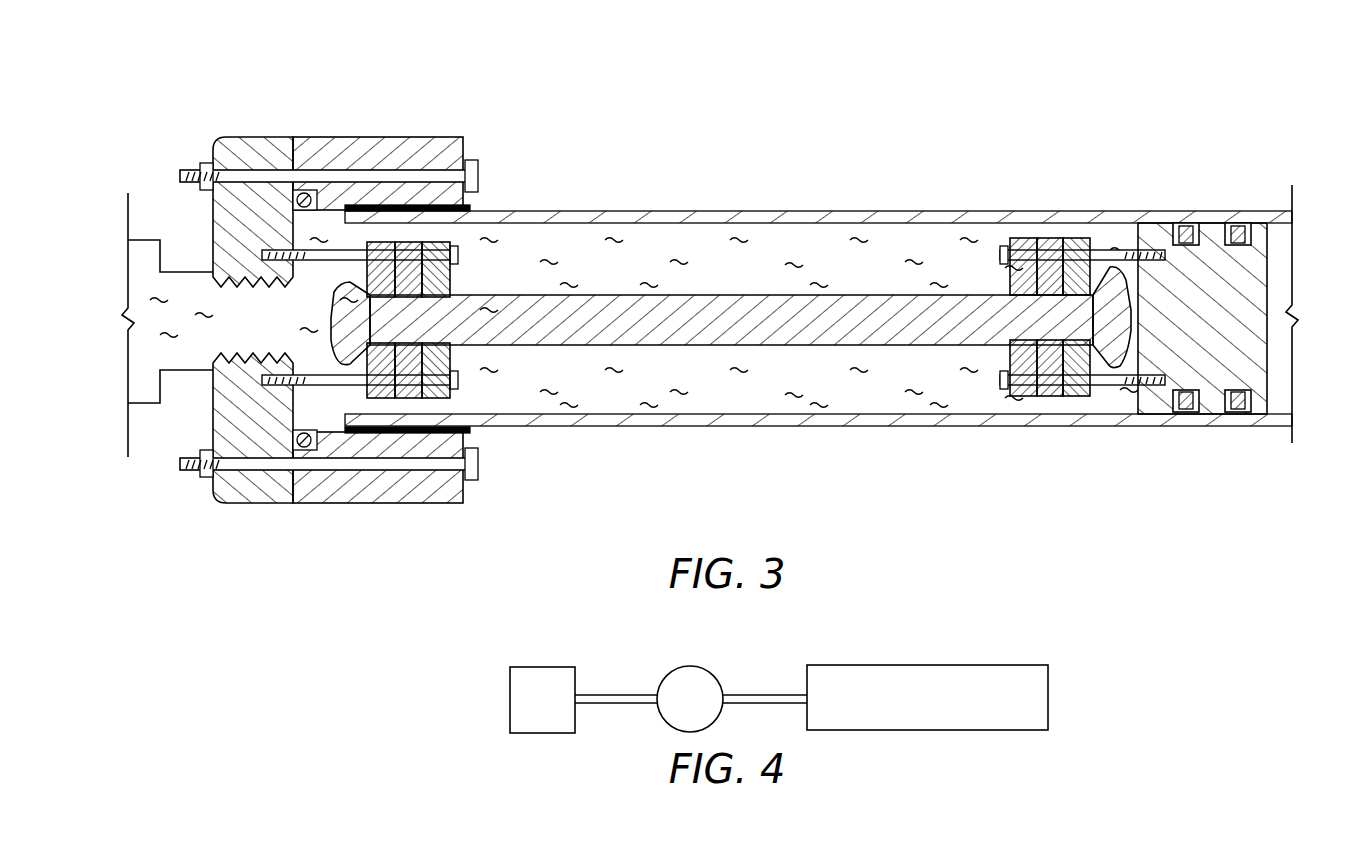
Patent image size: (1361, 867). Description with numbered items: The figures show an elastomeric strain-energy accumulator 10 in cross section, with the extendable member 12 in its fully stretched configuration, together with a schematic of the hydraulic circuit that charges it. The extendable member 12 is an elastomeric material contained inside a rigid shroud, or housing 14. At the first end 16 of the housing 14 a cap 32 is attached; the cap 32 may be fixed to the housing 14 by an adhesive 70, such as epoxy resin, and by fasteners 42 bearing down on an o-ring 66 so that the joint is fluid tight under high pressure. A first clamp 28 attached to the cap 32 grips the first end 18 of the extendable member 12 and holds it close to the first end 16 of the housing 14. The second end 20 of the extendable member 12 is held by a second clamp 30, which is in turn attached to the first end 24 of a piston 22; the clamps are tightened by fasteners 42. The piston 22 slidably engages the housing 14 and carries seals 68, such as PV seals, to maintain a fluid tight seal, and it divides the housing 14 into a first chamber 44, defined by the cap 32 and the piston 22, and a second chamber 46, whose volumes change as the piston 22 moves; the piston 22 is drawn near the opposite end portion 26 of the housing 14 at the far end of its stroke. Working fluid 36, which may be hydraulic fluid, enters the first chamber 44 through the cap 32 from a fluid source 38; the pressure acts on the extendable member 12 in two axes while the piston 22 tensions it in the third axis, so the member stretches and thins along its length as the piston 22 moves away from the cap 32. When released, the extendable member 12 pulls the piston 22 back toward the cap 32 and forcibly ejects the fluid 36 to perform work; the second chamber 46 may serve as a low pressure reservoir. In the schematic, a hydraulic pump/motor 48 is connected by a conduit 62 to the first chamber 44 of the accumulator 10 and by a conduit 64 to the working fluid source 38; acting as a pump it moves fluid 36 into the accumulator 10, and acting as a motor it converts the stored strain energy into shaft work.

In FIG. 3, the accumulator 10 is at (1126, 94).
In FIG. 4, the accumulator 10 is at (915, 706).
In FIG. 3, the extendable member 12 is at (610, 332).
In FIG. 3, the housing 14 is at (642, 211).
In FIG. 3, the first end of the housing 16 is at (335, 220).
In FIG. 3, the first end of the extendable member 18 is at (334, 345).
In FIG. 3, the second end of the extendable member 20 is at (1095, 350).
In FIG. 3, the piston 22 is at (1294, 414).
In FIG. 3, the first end of the piston 24 is at (1137, 242).
In FIG. 3, the end portion 26 is at (1298, 214).
In FIG. 3, the first clamp 28 is at (447, 240).
In FIG. 3, the second clamp 30 is at (1045, 240).
In FIG. 3, the cap 32 is at (310, 137).
In FIG. 3, the working fluid 36 is at (495, 400).
In FIG. 3, the fluid source 38 is at (143, 252).
In FIG. 4, the fluid source 38 is at (530, 712).
In FIG. 3, the fasteners 42 is at (400, 175).
In FIG. 3, the first chamber 44 is at (668, 230).
In FIG. 3, the second chamber 46 is at (1282, 355).
In FIG. 4, the pump/motor 48 is at (677, 713).
In FIG. 4, the conduit 62 is at (780, 692).
In FIG. 4, the conduit 64 is at (640, 692).
In FIG. 3, the o-ring 66 is at (298, 195).
In FIG. 3, the seals 68 is at (1234, 222).
In FIG. 3, the adhesive 70 is at (440, 208).